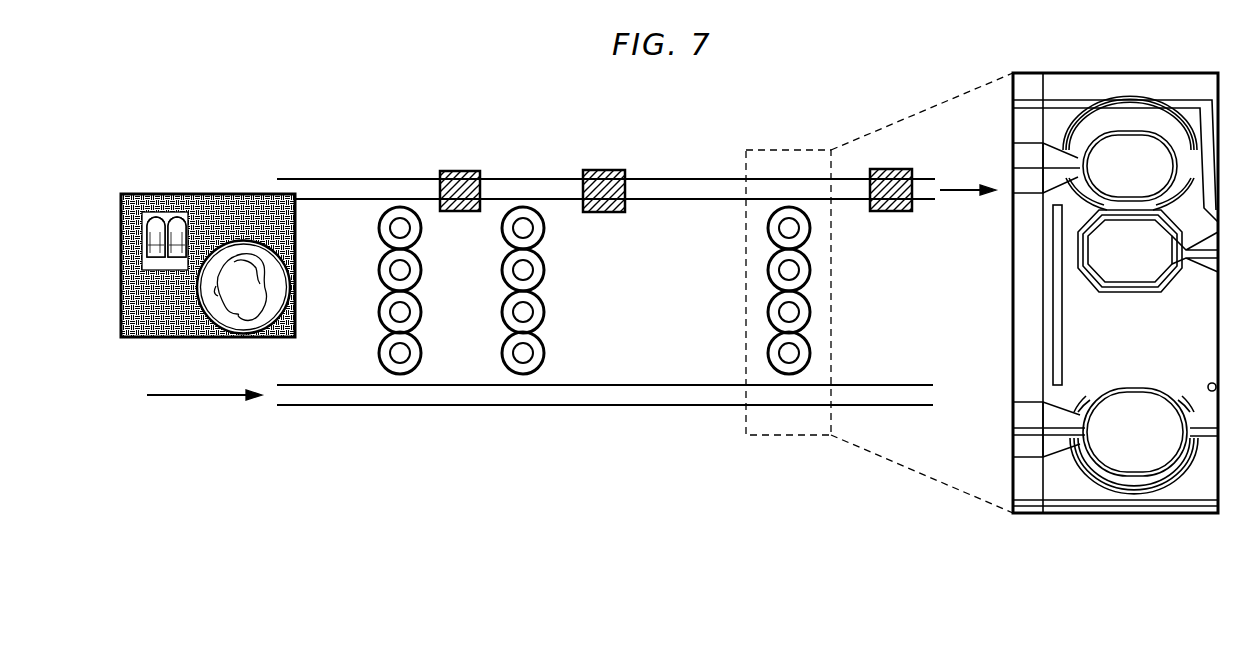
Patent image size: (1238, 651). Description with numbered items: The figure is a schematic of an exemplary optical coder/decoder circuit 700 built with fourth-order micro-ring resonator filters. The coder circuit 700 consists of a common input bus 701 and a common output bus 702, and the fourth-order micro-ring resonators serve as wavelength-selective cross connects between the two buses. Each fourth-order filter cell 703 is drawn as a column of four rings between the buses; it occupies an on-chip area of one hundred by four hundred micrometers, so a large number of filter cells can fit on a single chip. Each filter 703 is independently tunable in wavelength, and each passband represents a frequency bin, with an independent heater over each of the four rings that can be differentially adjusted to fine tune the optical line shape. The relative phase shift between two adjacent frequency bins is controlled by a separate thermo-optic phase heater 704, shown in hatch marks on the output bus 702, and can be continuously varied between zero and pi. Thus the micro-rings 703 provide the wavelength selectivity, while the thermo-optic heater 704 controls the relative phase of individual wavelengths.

The coder/decoder circuit 700 is at (316, 103).
The common input bus 701 is at (458, 393).
The common output bus 702 is at (728, 186).
The fourth-order filter cell 703 is at (788, 375).
The thermo-optic phase heater 704 is at (600, 168).